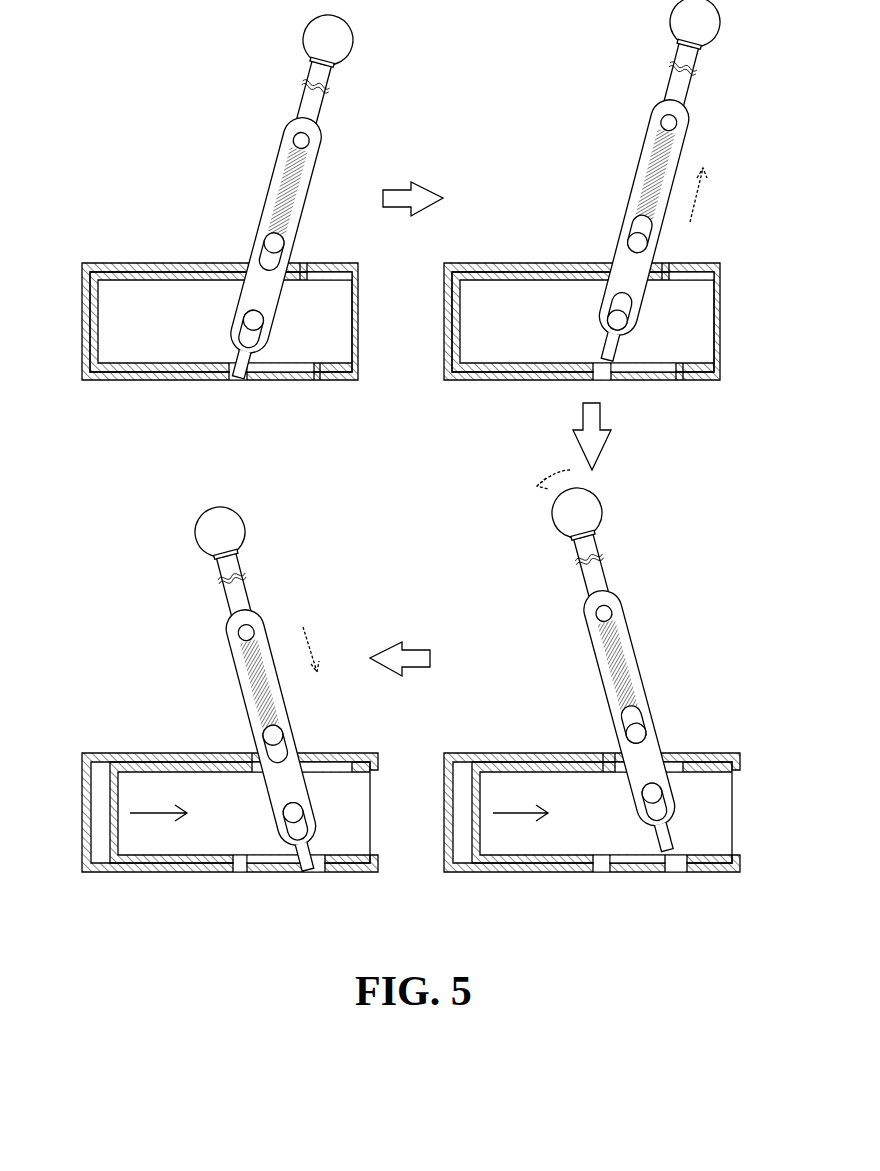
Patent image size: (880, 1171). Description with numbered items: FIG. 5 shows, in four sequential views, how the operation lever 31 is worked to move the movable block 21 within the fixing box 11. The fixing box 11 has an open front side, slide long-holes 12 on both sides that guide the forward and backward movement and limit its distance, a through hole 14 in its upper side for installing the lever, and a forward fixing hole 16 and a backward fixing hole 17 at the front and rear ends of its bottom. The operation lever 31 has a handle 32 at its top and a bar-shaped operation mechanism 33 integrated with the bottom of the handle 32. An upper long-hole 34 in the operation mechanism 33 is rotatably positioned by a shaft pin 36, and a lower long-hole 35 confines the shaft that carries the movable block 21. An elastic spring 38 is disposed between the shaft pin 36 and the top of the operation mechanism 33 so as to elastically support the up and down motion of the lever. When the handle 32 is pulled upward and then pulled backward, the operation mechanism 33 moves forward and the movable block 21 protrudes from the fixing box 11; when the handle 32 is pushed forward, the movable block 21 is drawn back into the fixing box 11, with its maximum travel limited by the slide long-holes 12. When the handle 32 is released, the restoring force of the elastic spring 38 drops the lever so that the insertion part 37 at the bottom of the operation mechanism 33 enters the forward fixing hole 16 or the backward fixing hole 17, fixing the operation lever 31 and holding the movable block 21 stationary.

The fixing box 11 is at (98, 263).
The slide long-hole 12 is at (290, 320).
The through hole 14 is at (308, 263).
The forward fixing hole 16 is at (316, 381).
The backward fixing hole 17 is at (236, 381).
The movable block 21 is at (133, 272).
The operation lever 31 is at (392, 104).
The handle 32 is at (320, 104).
The operation mechanism 33 is at (318, 150).
The upper long-hole 34 is at (260, 254).
The lower long-hole 35 is at (243, 323).
The shaft pin 36 is at (262, 240).
The insertion part 37 is at (246, 366).
The elastic spring 38 is at (302, 172).